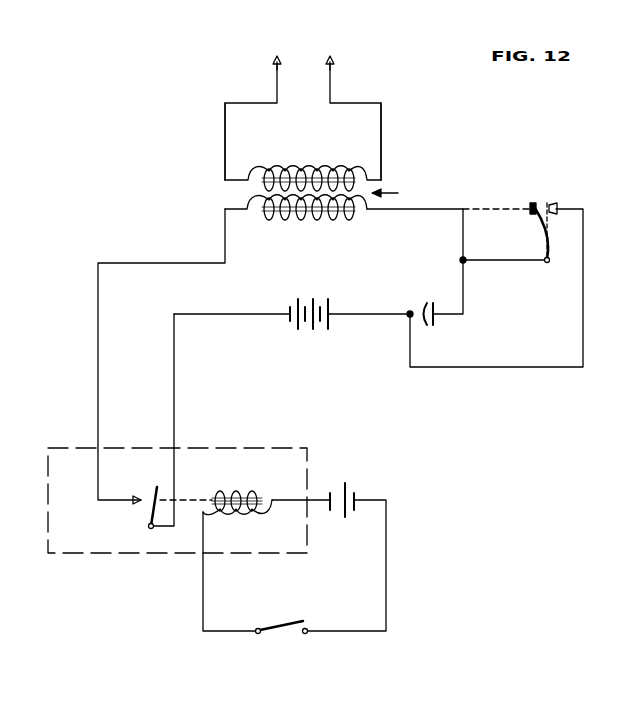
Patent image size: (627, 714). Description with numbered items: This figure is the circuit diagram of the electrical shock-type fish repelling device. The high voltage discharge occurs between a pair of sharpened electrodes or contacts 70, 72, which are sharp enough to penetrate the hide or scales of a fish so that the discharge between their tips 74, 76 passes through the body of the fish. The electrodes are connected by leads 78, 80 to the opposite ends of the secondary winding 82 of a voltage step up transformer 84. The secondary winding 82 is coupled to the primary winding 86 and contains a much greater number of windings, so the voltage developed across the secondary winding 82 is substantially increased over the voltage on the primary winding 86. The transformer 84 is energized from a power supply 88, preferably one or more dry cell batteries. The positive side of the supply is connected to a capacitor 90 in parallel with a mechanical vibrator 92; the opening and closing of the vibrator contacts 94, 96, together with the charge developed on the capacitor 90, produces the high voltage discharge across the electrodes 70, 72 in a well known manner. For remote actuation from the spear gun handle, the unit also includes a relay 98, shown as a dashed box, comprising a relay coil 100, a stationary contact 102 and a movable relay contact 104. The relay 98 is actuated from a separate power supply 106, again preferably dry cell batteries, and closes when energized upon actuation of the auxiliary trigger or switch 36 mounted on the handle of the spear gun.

The auxiliary trigger and electrical switch 36 is at (288, 622).
The sharpened electrode 70 is at (274, 62).
The sharpened electrode 72 is at (333, 62).
The electrode tip 74 is at (276, 58).
The electrode tip 76 is at (325, 60).
The lead 78 is at (225, 140).
The lead 80 is at (381, 137).
The secondary winding 82 is at (268, 185).
The voltage step up transformer 84 is at (392, 193).
The primary winding 86 is at (268, 216).
The power supply 88 is at (292, 322).
The capacitor 90 is at (433, 311).
The mechanical vibrator 92 is at (529, 219).
The vibrator contact 94 is at (531, 206).
The vibrator contact 96 is at (557, 209).
The relay 98 is at (268, 447).
The relay coil 100 is at (218, 493).
The stationary contact 102 is at (143, 499).
The movable relay contact 104 is at (150, 522).
The power supply 106 is at (351, 492).